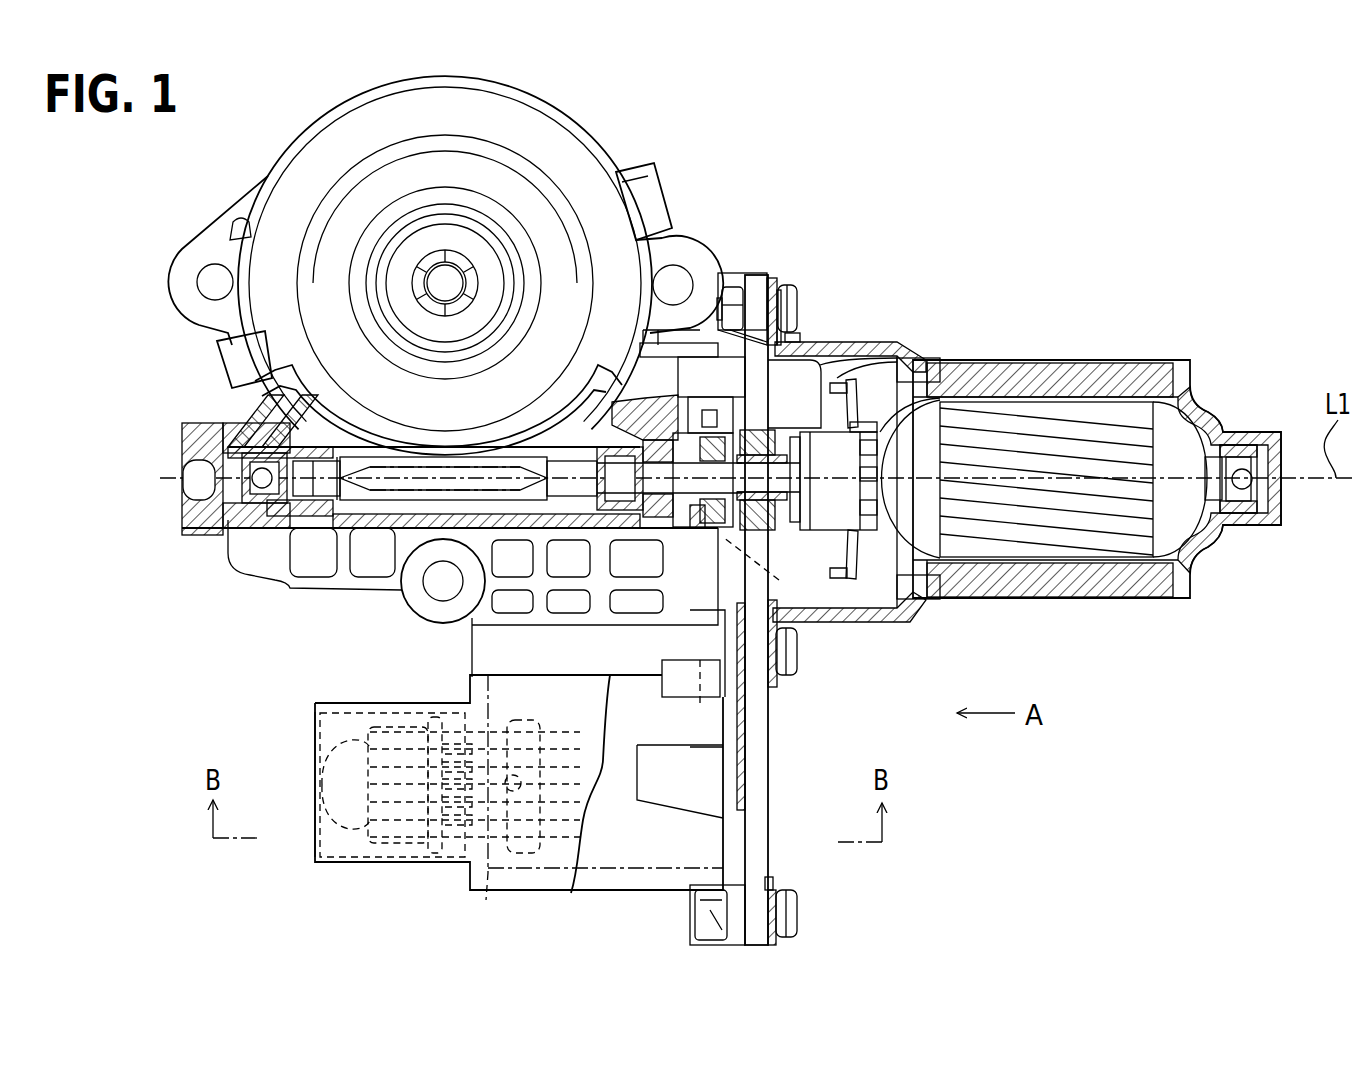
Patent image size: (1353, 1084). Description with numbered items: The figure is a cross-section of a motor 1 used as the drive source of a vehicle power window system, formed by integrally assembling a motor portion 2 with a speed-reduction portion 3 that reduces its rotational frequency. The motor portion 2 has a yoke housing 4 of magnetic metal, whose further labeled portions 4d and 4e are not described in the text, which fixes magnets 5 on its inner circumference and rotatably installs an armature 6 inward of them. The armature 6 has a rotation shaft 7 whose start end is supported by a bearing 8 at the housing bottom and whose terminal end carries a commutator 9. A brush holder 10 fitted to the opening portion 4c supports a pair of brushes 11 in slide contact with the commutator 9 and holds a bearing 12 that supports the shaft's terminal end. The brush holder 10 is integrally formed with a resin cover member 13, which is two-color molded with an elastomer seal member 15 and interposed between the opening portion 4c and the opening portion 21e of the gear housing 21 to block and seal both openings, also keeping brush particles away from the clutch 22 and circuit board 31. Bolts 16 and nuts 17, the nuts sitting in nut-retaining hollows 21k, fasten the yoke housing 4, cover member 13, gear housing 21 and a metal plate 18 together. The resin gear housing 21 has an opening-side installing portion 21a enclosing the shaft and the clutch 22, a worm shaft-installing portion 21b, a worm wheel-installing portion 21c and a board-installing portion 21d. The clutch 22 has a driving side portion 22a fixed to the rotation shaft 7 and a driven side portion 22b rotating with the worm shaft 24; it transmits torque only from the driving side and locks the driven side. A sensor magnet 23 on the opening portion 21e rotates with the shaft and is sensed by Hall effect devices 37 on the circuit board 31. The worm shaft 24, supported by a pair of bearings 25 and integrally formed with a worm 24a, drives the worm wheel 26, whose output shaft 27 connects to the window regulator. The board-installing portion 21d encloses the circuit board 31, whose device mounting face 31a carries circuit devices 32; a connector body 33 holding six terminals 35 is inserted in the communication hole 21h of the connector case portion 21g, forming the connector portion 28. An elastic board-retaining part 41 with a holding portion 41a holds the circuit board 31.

The motor 1 is at (976, 211).
The motor portion 2 is at (1138, 350).
The speed-reduction portion 3 is at (613, 156).
The yoke housing 4 is at (1035, 360).
The opening portion 4c is at (806, 352).
The bracket upper fixing portion 4d is at (778, 298).
The bracket lower fixing portion 4e is at (785, 686).
The magnets 5 is at (1087, 373).
The armature 6 is at (1188, 428).
The rotation shaft 7 is at (785, 462).
The bearing 8 is at (1254, 432).
The commutator 9 is at (862, 460).
The brush holder 10 is at (896, 350).
The brushes 11 is at (848, 406).
The bearing 12 is at (762, 522).
The cover member 13 is at (770, 742).
The seal member 15 is at (771, 285).
The bolts 16 is at (790, 300).
The nuts 17 is at (734, 290).
The metal plate 18 is at (772, 882).
The gear housing 21 is at (240, 568).
The opening-side installing portion 21a is at (632, 395).
The worm shaft-installing portion 21b is at (413, 552).
The worm wheel-installing portion 21c is at (232, 388).
The board-installing portion 21d is at (622, 780).
The opening portion 21e is at (795, 335).
The connector case portion 21g is at (372, 862).
The communication hole 21h is at (313, 860).
The nut-retaining hollows 21k is at (740, 273).
The clutch 22 is at (700, 448).
The driving side portion 22a is at (685, 512).
The driven side portion 22b is at (636, 560).
The sensor magnet 23 is at (752, 420).
The worm shaft 24 is at (568, 505).
The worm 24a is at (378, 505).
The bearings 25 is at (270, 505).
The worm wheel 26 is at (345, 378).
The output shaft 27 is at (440, 276).
The connector portion 28 is at (392, 702).
The circuit board 31 is at (572, 892).
The device mounting face 31a is at (603, 740).
The circuit devices 32 is at (655, 788).
The connector body 33 is at (598, 805).
The terminals 35 is at (313, 773).
The Hall effect devices 37 is at (764, 569).
The board-retaining part 41 is at (663, 662).
The holding portion 41a is at (698, 705).